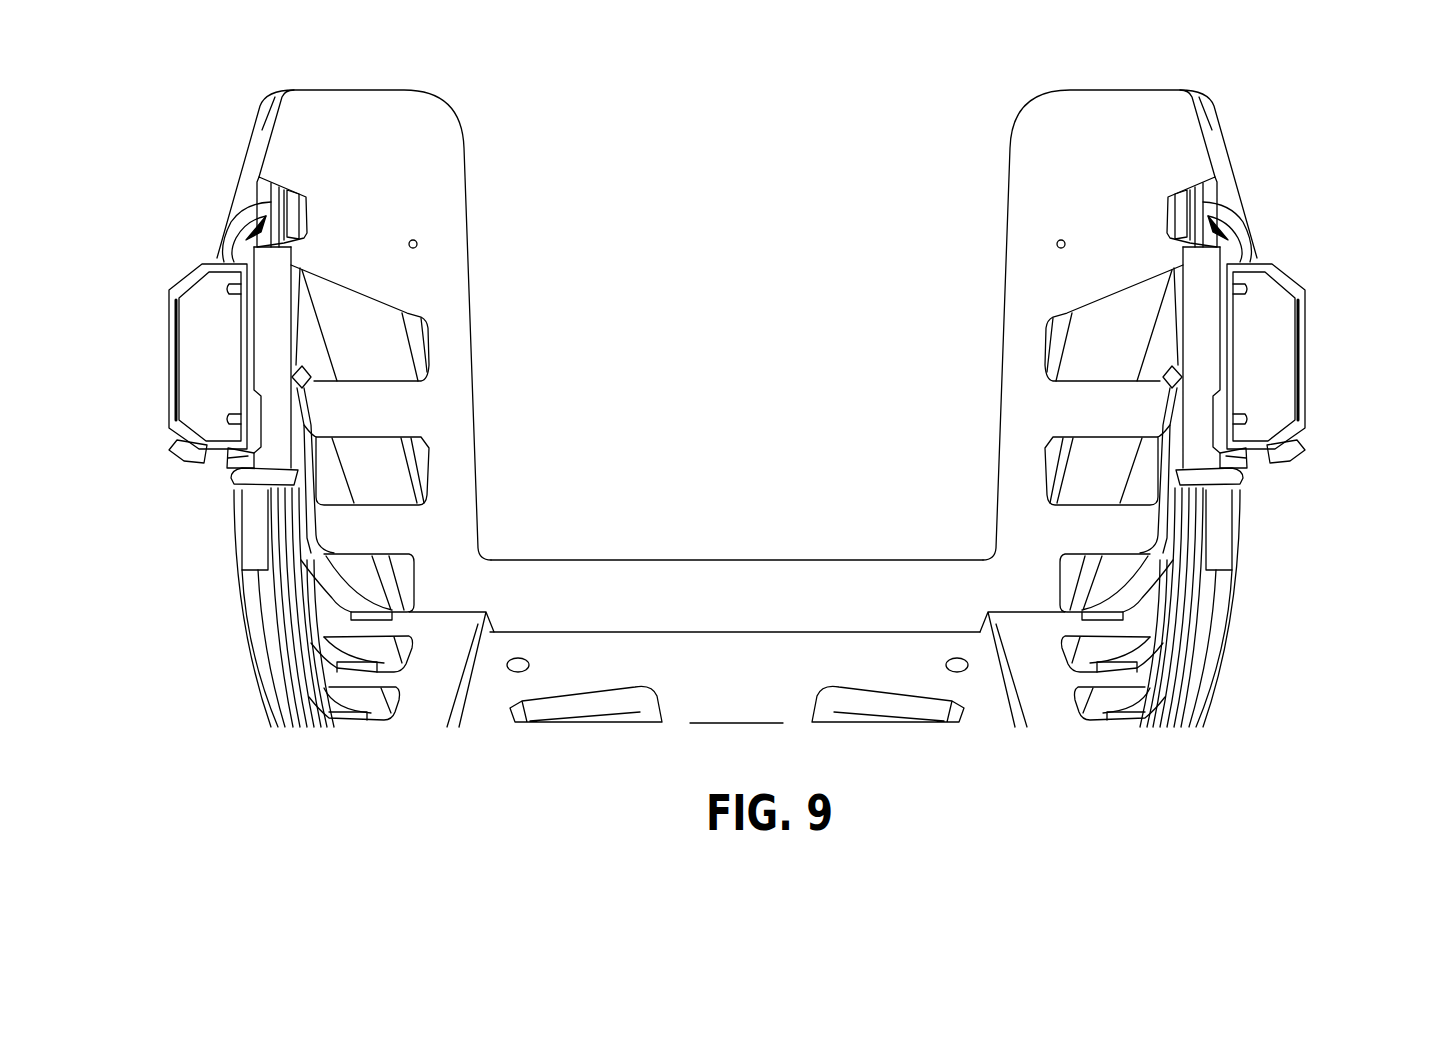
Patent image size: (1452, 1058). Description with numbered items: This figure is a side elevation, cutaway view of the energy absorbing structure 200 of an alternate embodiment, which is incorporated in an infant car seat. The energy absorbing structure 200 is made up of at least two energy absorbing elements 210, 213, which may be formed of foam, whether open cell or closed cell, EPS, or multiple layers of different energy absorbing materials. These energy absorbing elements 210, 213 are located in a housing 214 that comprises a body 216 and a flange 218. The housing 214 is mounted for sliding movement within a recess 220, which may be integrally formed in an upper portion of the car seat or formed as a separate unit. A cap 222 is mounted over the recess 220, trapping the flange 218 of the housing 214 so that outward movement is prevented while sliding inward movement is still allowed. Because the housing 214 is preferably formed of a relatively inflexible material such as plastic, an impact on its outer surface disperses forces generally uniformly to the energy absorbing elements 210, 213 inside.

The energy absorbing structure 200 is at (1288, 243).
The energy absorbing element 210 is at (1200, 323).
The energy absorbing element 213 is at (1267, 385).
The housing 214 is at (1325, 353).
The body 216 is at (1278, 458).
The flange 218 is at (1236, 482).
The recess 220 is at (1167, 208).
The cap 222 is at (1238, 222).